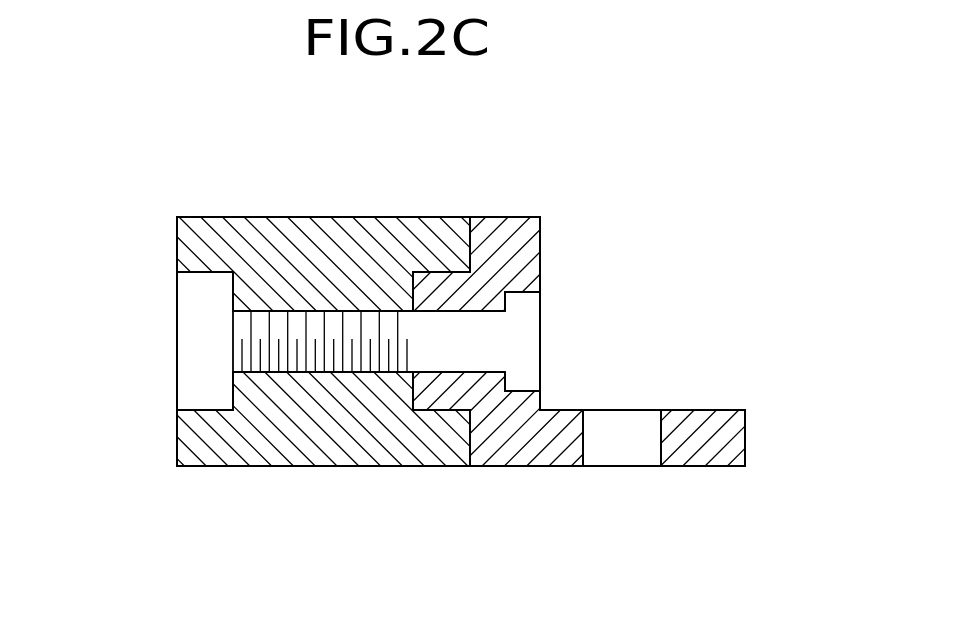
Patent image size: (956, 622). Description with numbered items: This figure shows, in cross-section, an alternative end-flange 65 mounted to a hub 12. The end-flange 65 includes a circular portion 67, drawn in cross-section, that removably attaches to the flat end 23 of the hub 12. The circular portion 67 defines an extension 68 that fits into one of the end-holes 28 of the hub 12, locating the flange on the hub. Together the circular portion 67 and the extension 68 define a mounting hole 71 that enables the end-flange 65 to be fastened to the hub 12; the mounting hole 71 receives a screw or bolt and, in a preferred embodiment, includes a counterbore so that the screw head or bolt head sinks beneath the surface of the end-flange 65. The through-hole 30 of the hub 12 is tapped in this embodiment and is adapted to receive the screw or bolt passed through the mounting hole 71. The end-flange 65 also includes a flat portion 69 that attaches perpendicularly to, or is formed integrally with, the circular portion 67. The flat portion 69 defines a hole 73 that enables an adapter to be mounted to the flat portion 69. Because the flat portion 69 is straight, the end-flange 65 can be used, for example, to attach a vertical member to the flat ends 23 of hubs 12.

The hub 12 is at (168, 219).
The flat end 23 is at (177, 255).
The end-hole 28 is at (233, 292).
The through-hole 30 is at (265, 372).
The end-flange 65 is at (528, 206).
The circular portion 67 is at (498, 217).
The extension 68 is at (440, 411).
The flat portion 69 is at (744, 450).
The mounting hole 71 is at (523, 292).
The hole 73 is at (587, 443).